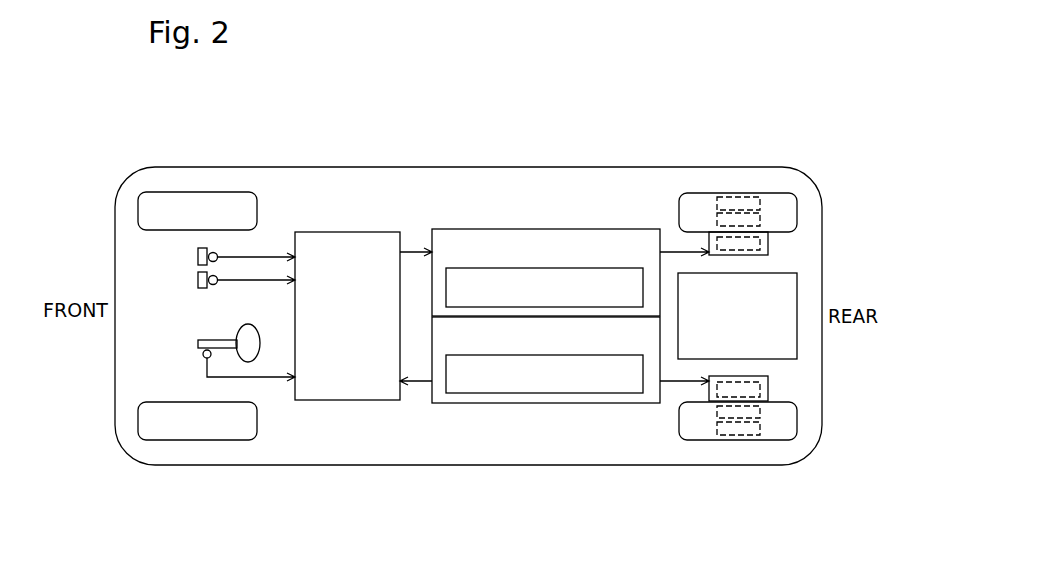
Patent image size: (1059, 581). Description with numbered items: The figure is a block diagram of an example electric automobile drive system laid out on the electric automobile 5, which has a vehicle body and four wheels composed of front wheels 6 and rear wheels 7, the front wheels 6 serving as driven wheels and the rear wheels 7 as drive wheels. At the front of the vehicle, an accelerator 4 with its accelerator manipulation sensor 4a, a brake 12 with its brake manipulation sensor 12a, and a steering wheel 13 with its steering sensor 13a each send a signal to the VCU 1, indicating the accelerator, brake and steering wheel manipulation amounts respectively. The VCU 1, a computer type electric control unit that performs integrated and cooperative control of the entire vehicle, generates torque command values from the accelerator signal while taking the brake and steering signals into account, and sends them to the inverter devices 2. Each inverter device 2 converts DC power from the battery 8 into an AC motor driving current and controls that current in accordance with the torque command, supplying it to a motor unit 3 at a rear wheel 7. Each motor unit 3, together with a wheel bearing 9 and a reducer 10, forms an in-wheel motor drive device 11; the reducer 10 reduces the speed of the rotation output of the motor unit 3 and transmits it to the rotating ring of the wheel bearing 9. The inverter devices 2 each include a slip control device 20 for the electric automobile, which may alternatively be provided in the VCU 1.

The VCU 1 is at (353, 402).
The inverter device 2 is at (500, 231).
The motor unit 3 is at (757, 242).
The accelerator 4 is at (190, 229).
The accelerator manipulation sensor 4a is at (207, 250).
The electric automobile 5 is at (333, 177).
The front wheel 6 is at (197, 192).
The rear wheel 7 is at (695, 197).
The battery 8 is at (790, 290).
The wheel bearing 9 is at (735, 200).
The reducer 10 is at (760, 217).
The in-wheel motor drive device 11 is at (781, 317).
The brake 12 is at (181, 271).
The brake manipulation sensor 12a is at (210, 288).
The steering wheel 13 is at (181, 363).
The steering sensor 13a is at (139, 376).
The slip control device 20 is at (451, 284).